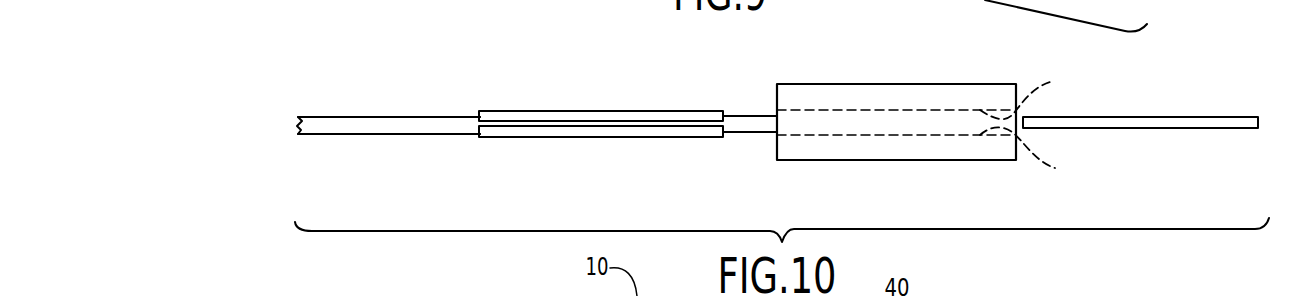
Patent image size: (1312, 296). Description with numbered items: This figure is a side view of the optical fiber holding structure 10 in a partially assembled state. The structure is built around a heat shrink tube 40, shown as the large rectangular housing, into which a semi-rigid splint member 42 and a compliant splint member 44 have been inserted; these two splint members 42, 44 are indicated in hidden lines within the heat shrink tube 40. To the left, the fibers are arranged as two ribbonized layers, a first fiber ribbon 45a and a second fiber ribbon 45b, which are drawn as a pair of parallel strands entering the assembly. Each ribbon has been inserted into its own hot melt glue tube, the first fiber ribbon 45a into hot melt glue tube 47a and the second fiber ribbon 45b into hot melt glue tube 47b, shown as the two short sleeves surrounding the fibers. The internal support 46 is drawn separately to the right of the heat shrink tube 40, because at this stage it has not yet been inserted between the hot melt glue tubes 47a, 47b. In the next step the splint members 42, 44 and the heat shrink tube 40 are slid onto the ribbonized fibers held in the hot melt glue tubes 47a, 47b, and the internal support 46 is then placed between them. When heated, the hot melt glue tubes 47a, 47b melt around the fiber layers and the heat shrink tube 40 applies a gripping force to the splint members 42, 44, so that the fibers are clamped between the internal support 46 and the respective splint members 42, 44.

The optical fiber holding structure 10 is at (903, 62).
The heat shrink tube 40 is at (832, 84).
The semi-rigid splint member 42 is at (1032, 88).
The compliant splint member 44 is at (1035, 155).
The first fiber ribbon 45a is at (360, 117).
The second fiber ribbon 45b is at (375, 135).
The internal support 46 is at (1203, 116).
The hot melt glue tube 47a is at (566, 111).
The hot melt glue tube 47b is at (568, 137).